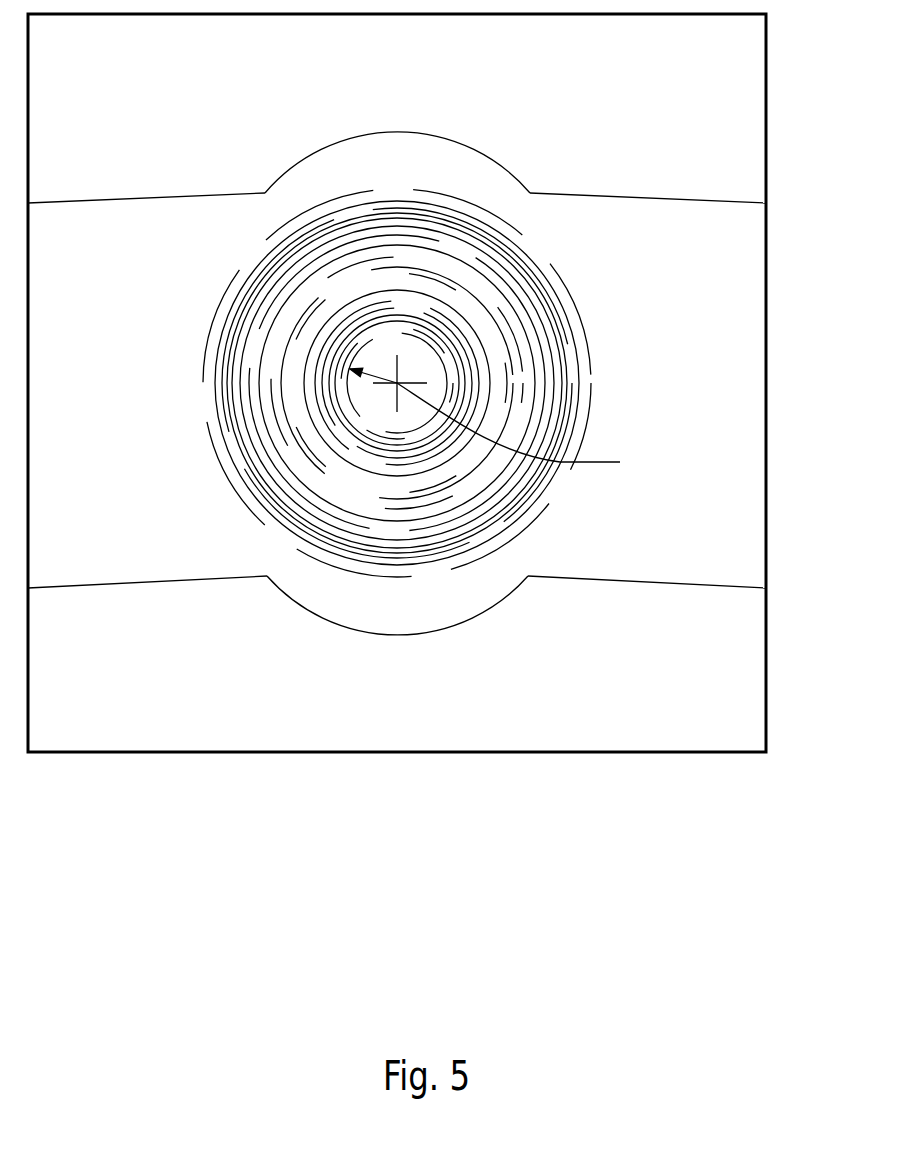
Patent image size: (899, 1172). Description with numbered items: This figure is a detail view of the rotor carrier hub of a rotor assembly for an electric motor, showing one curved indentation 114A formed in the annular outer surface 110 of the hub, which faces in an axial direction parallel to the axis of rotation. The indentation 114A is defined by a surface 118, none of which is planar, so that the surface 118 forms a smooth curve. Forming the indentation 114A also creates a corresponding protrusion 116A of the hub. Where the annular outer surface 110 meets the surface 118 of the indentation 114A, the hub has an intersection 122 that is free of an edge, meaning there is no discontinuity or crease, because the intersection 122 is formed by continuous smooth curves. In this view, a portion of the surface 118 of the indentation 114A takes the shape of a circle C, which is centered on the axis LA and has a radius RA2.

The annular outer surface 110 is at (173, 250).
The intersection 122 is at (332, 200).
The protrusion 116A is at (398, 130).
The curved indentation 114A is at (590, 325).
The surface 118 is at (242, 390).
The circle C is at (363, 345).
The radius RA2 is at (369, 383).
The axis LA is at (528, 431).